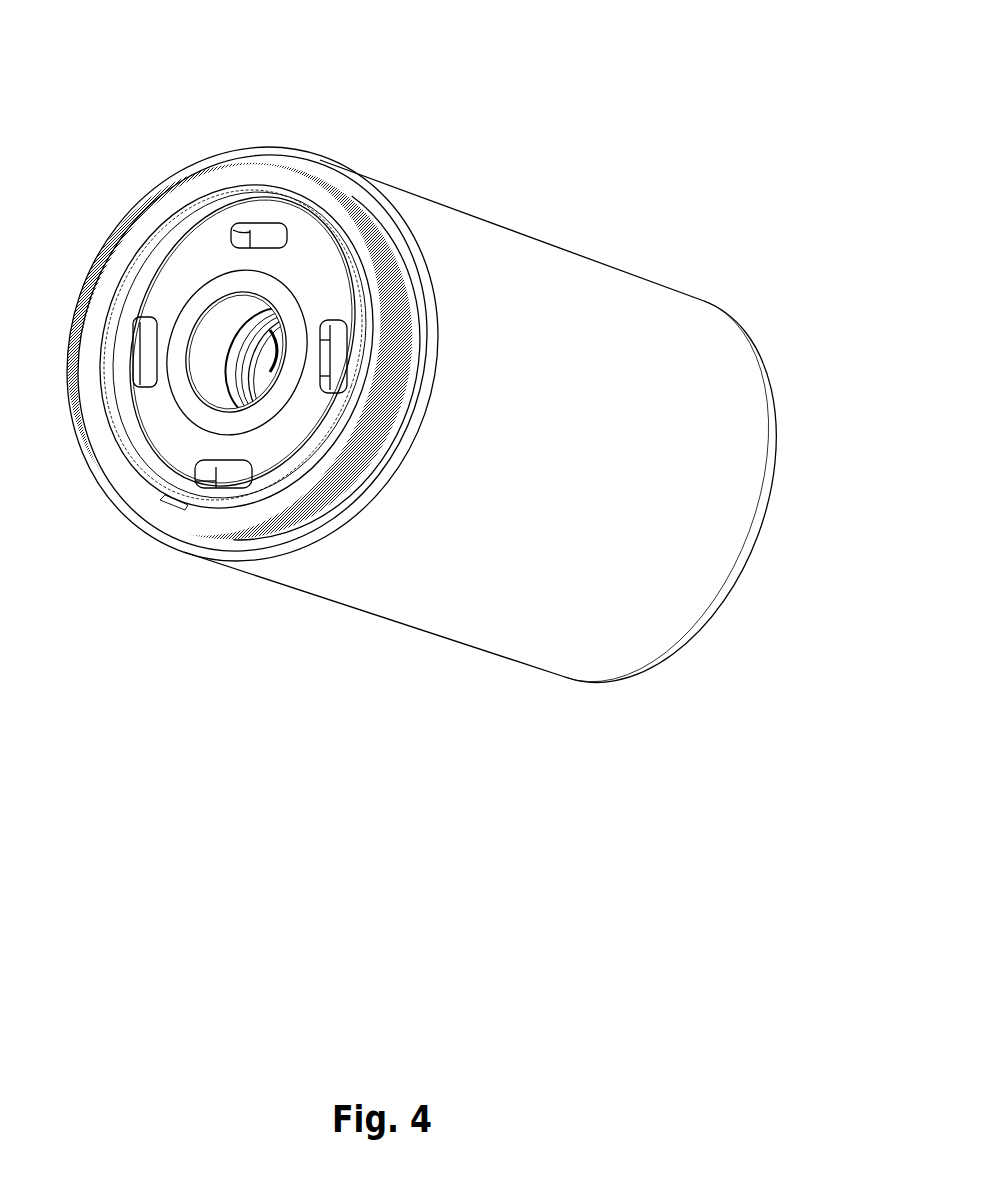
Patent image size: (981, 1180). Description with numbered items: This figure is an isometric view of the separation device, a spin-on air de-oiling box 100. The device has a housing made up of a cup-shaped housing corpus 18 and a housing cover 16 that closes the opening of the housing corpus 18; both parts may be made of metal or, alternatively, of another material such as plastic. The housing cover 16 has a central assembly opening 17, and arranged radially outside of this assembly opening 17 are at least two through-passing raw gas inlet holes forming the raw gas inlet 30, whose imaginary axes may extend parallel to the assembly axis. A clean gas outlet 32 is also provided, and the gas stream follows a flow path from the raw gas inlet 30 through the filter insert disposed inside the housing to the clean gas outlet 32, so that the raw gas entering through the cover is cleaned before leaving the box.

The spin-on air de-oiling box 100 is at (148, 80).
The housing cover 16 is at (210, 280).
The assembly opening 17 is at (233, 339).
The housing corpus 18 is at (550, 343).
The raw gas inlet 30 is at (263, 238).
The clean gas outlet 32 is at (233, 362).